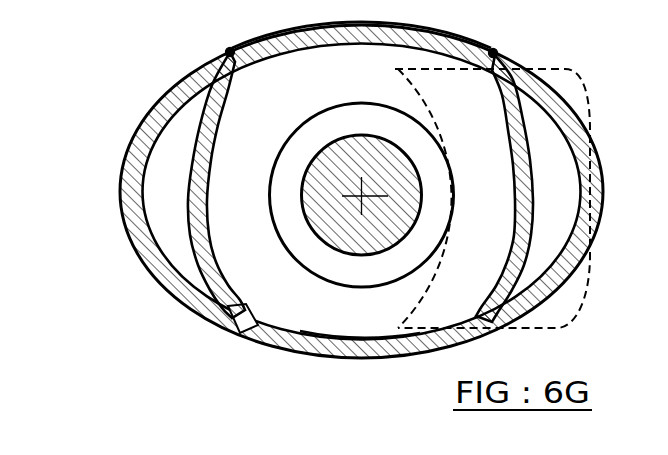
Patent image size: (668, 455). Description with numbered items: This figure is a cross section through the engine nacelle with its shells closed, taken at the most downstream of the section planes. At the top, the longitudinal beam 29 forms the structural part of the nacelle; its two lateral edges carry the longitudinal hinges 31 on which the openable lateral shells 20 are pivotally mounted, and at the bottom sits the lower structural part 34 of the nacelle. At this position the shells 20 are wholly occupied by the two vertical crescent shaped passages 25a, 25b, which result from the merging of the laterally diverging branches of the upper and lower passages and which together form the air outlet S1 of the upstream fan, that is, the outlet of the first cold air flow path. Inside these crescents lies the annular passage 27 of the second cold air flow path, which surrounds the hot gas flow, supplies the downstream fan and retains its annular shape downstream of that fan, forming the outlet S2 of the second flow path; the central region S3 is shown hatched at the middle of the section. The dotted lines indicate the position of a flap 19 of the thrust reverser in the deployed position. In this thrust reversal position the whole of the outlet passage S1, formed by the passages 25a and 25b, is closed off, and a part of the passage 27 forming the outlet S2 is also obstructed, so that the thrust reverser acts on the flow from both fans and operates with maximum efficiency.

The flap of the thrust reverser 19 is at (553, 83).
The openable lateral shells 20 is at (140, 234).
The vertical crescent shaped passage 25a is at (188, 128).
The vertical crescent shaped passage 25b is at (542, 145).
The annular passage 27 is at (327, 322).
The longitudinal beam 29 is at (406, 40).
The longitudinal hinges 31 is at (229, 51).
The lower structural part 34 is at (257, 338).
The air outlet of the upstream fan S1 is at (363, 196).
The outlet of the second flow path S2 is at (359, 196).
The space S3 is at (362, 195).